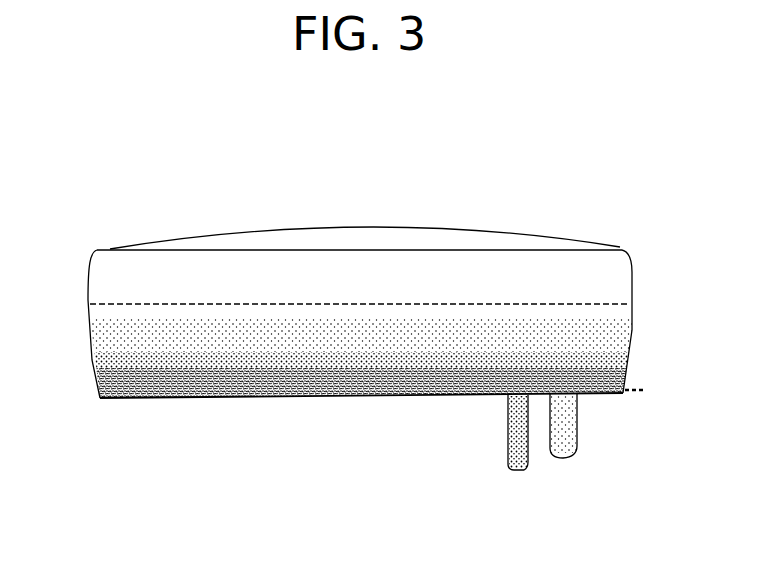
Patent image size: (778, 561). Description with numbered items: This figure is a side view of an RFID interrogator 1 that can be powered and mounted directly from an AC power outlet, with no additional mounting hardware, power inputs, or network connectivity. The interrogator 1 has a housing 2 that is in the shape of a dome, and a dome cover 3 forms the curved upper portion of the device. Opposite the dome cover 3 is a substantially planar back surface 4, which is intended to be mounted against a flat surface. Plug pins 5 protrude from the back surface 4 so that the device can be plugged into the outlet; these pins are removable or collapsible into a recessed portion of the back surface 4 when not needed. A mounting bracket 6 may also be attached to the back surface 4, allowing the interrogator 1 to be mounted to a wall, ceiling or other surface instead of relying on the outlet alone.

The RFID interrogator 1 is at (100, 238).
The housing 2 is at (632, 274).
The dome cover 3 is at (475, 226).
The back surface 4 is at (272, 398).
The plug pins 5 is at (580, 448).
The mounting bracket 6 is at (654, 388).